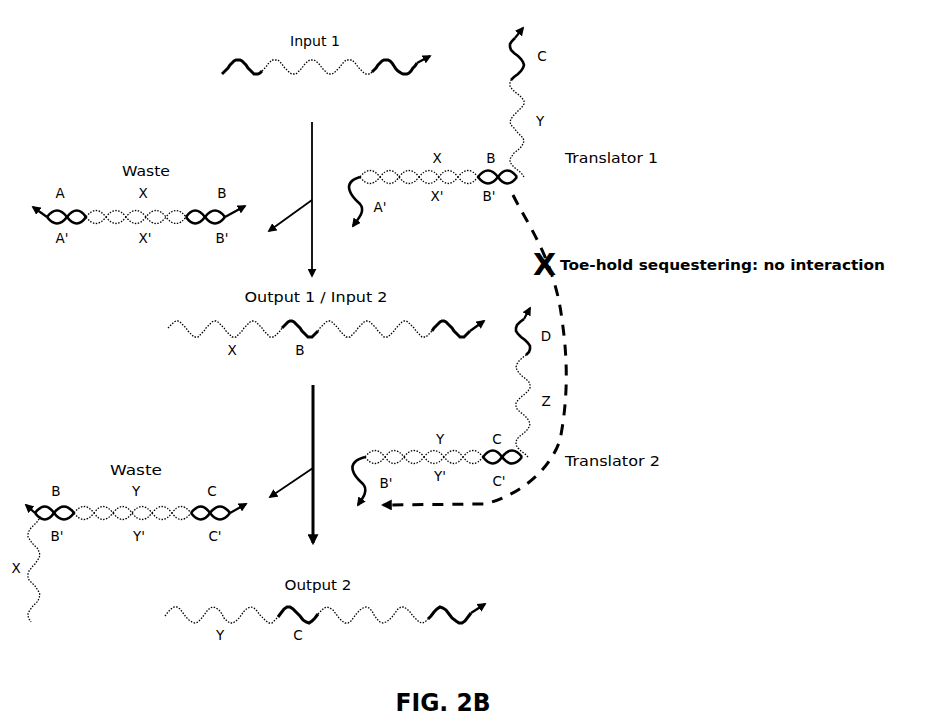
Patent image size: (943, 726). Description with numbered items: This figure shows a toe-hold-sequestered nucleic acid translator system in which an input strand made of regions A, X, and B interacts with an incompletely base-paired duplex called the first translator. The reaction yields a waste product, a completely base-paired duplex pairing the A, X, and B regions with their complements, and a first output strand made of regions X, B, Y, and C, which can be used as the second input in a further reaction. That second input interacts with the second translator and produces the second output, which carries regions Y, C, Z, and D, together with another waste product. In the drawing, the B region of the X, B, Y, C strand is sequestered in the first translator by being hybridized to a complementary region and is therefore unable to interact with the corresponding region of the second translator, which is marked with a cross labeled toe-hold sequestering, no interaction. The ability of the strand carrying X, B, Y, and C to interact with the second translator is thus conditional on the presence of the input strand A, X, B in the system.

The A region A is at (242, 80).
The X region X is at (317, 80).
The B region B is at (401, 78).
The Y region Y is at (375, 339).
The C region C is at (458, 339).
The Z region Z is at (373, 625).
The D region D is at (456, 623).